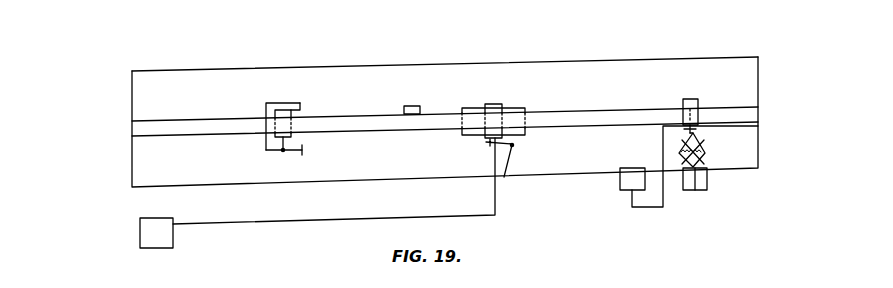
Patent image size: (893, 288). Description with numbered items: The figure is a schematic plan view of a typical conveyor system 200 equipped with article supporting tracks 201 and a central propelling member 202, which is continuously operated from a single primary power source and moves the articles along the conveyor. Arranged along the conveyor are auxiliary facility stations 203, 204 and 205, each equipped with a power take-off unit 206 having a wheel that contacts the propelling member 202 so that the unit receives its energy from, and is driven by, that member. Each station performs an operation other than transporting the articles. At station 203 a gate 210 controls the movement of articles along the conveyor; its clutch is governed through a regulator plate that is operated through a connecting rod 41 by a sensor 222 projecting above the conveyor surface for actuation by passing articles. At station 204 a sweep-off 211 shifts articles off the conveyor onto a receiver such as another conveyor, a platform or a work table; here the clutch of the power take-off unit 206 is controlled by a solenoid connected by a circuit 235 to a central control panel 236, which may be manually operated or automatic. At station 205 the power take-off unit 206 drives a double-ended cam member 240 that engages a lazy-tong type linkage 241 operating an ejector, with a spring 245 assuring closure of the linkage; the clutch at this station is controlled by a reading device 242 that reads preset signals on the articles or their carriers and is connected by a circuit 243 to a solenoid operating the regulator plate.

The conveyor system 200 is at (445, 53).
The article supporting tracks 201 is at (188, 83).
The central propelling member 202 is at (140, 118).
The connecting rod 41 is at (357, 106).
The auxiliary facility station 203 is at (281, 99).
The gate 210 is at (300, 102).
The power take-off unit 206 is at (288, 111).
The auxiliary facility station 204 is at (467, 103).
The sweep-off 211 is at (503, 178).
The sensor 222 is at (418, 106).
The auxiliary facility station 205 is at (693, 87).
The double-ended cam member 240 is at (690, 134).
The lazy-tong type linkage 241 is at (748, 150).
The spring 245 is at (700, 148).
The circuit 243 is at (663, 142).
The reading device 242 is at (625, 187).
The circuit 235 is at (337, 197).
The central control panel 236 is at (140, 227).